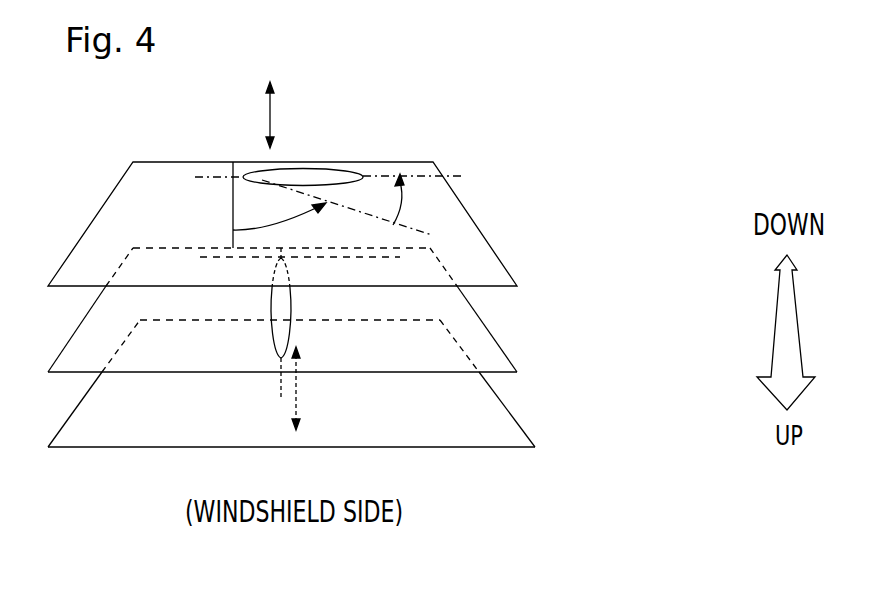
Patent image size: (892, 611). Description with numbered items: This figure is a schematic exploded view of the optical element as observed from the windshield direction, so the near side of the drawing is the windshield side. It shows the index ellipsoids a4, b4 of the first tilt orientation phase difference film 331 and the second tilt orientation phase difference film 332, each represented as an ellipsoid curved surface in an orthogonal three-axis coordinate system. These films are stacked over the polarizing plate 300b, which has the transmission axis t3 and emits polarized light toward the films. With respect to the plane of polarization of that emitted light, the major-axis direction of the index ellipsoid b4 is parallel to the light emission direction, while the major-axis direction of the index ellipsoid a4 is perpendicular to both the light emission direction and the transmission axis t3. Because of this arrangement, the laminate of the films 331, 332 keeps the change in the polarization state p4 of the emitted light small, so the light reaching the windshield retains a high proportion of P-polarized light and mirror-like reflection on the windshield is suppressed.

The first tilt orientation phase difference film 331 is at (455, 218).
The second tilt orientation phase difference film 332 is at (475, 335).
The polarizing plate 300b is at (485, 418).
The polarization state p4 is at (272, 110).
The index ellipsoid a4 is at (305, 172).
The index ellipsoid b4 is at (283, 325).
The transmission axis t3 is at (300, 392).